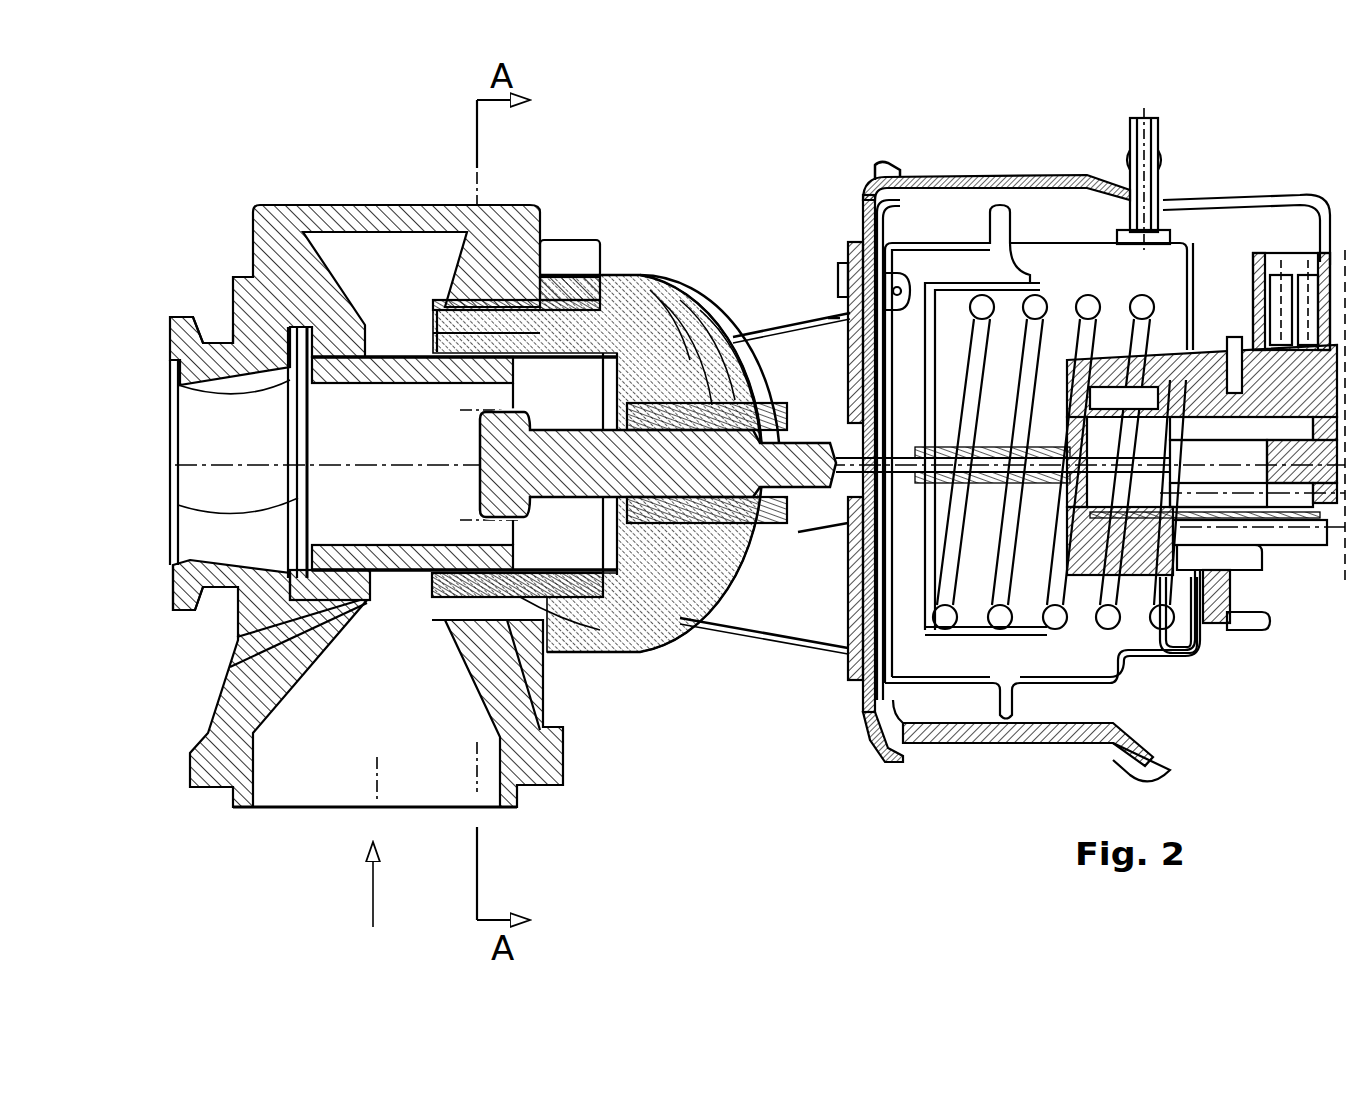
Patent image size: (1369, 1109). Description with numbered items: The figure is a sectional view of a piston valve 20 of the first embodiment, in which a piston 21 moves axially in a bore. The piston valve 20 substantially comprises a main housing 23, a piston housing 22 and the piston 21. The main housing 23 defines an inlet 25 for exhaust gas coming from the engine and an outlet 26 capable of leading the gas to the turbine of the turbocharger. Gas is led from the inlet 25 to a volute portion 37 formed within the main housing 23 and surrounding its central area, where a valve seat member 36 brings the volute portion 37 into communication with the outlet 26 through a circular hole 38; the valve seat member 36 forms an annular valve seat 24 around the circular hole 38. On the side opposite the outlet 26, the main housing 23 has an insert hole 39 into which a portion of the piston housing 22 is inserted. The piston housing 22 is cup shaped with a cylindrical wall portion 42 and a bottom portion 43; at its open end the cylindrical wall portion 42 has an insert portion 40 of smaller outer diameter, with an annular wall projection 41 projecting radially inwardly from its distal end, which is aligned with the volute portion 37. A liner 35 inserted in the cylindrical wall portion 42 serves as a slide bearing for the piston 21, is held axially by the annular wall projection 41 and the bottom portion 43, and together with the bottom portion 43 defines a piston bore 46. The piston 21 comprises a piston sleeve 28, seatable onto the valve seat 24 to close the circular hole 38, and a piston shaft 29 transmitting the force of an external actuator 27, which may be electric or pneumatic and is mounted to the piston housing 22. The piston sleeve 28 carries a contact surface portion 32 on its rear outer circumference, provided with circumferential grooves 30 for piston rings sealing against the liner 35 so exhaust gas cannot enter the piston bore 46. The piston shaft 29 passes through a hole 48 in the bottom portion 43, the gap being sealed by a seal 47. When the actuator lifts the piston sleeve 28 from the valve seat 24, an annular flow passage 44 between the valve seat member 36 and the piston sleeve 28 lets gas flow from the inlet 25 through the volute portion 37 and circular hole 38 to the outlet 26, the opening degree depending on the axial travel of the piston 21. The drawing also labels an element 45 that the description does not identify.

The piston valve 20 is at (182, 186).
The piston 21 is at (503, 443).
The piston housing 22 is at (629, 408).
The main housing 23 is at (527, 198).
The annular valve seat 24 is at (232, 333).
The inlet 25 is at (430, 814).
The outlet 26 is at (150, 398).
The external actuator 27 is at (1192, 175).
The piston sleeve 28 is at (560, 645).
The piston shaft 29 is at (712, 540).
The grooves 30 is at (542, 272).
The contact surface portion 32 is at (582, 275).
The liner 35 is at (662, 600).
The valve seat member 36 is at (236, 283).
The volute portion 37 is at (400, 287).
The circular hole 38 is at (300, 500).
The insert hole 39 is at (535, 787).
The insert portion 40 is at (563, 657).
The annular wall projection 41 is at (432, 335).
The cylindrical wall portion 42 is at (663, 262).
The bottom portion 43 is at (706, 290).
The annular flow passage 44 is at (232, 668).
The guide element 45 is at (538, 650).
The piston bore 46 is at (675, 555).
The seal 47 is at (726, 310).
The hole 48 is at (756, 335).